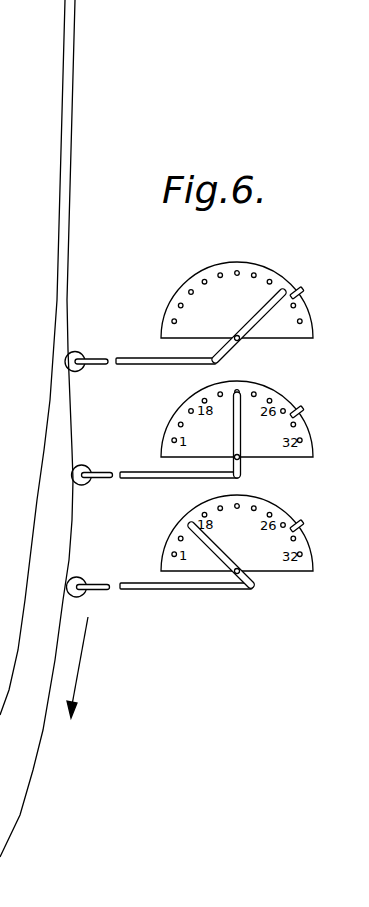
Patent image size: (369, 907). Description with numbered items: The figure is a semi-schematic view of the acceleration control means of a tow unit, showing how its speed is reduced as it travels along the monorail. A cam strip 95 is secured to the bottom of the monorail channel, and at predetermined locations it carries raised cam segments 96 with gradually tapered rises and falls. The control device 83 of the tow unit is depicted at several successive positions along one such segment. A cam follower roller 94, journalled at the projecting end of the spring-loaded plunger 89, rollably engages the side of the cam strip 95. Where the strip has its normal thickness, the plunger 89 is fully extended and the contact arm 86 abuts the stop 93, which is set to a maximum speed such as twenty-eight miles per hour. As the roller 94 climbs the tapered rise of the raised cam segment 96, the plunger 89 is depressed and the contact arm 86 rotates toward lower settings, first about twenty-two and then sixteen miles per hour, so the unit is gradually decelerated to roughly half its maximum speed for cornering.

The control device 83 is at (204, 262).
The contact arm 86 is at (246, 331).
The plunger 89 is at (118, 358).
The stop 93 is at (301, 289).
The cam follower roller 94 is at (77, 351).
The cam strip 95 is at (76, 139).
The raised cam segments 96 is at (41, 728).